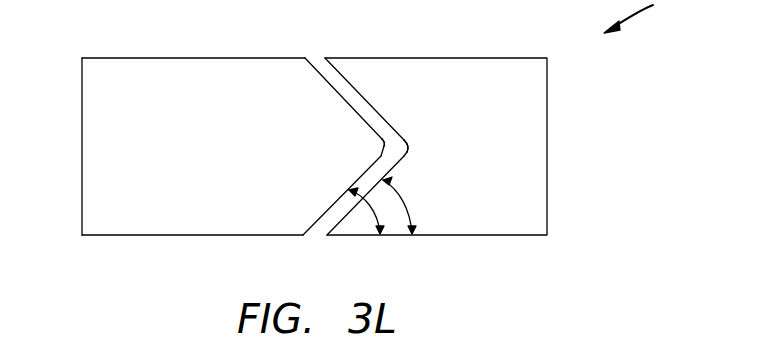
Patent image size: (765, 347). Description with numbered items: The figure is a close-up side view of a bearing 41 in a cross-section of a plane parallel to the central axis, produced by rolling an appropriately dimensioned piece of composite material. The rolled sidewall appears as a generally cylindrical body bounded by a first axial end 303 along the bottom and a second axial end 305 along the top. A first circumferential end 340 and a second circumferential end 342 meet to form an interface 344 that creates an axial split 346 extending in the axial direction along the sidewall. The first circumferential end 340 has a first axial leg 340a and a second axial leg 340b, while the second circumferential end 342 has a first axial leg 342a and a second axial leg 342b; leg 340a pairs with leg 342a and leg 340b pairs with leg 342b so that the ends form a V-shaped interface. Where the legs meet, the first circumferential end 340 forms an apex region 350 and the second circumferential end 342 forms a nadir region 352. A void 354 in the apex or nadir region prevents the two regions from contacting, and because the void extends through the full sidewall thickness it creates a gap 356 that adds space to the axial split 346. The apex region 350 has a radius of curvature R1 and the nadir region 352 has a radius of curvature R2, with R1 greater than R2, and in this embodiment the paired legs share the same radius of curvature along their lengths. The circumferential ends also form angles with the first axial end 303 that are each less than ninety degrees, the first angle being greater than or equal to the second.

The first circumferential end 340 is at (135, 57).
The second axial end 305 is at (237, 57).
The first axial end 303 is at (175, 236).
The second circumferential end 342 is at (470, 58).
The interface 344 is at (317, 58).
The axial split 346 is at (365, 125).
The first axial leg of the first circumferential end 340a is at (330, 87).
The first axial leg of the second circumferential end 342a is at (355, 90).
The second axial leg of the first circumferential end 340b is at (321, 217).
The second axial leg of the second circumferential end 342b is at (390, 170).
The apex region 350 is at (380, 141).
The nadir region 352 is at (412, 145).
The void 354 is at (380, 154).
The gap 356 is at (405, 153).
The radius of curvature of the first circumferential end R1 is at (386, 141).
The radius of curvature of the second circumferential end R2 is at (408, 138).
The bearing 41 is at (646, 16).